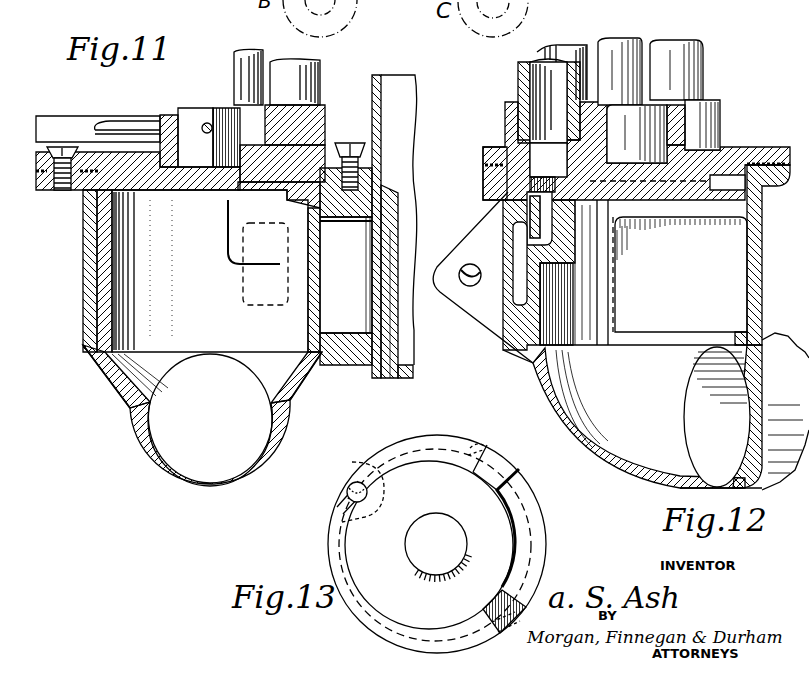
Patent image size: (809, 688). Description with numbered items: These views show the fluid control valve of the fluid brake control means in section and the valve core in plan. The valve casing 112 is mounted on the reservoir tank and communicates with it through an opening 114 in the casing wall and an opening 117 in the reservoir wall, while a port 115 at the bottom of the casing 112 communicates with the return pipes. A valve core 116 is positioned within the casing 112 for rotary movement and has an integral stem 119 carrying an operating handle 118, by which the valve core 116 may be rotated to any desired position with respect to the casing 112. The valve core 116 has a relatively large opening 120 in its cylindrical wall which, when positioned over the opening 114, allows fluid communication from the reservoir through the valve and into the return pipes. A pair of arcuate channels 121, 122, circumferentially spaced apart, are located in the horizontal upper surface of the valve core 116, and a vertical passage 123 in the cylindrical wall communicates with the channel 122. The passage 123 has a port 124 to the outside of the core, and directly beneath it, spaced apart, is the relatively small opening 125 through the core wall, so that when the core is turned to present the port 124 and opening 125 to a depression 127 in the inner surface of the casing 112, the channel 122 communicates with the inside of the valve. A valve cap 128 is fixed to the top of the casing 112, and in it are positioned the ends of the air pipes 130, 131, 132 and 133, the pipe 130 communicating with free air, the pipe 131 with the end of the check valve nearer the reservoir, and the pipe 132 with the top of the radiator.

In FIG. 11, the valve casing 112 is at (92, 278).
In FIG. 12, the valve casing 112 is at (754, 272).
In FIG. 11, the opening 114 is at (345, 318).
In FIG. 11, the port 115 is at (160, 418).
In FIG. 12, the port 115 is at (700, 430).
In FIG. 11, the valve core 116 is at (106, 305).
In FIG. 12, the valve core 116 is at (530, 322).
In FIG. 13, the valve core 116 is at (330, 543).
In FIG. 11, the opening 117 is at (381, 322).
In FIG. 11, the operating handle 118 is at (110, 122).
In FIG. 12, the operating handle 118 is at (690, 118).
In FIG. 11, the stem 119 is at (191, 118).
In FIG. 12, the stem 119 is at (645, 118).
In FIG. 13, the stem 119 is at (429, 553).
In FIG. 12, the opening 120 is at (662, 222).
In FIG. 13, the opening 120 is at (480, 446).
In FIG. 12, the arcuate channel 121 is at (727, 182).
In FIG. 13, the arcuate channel 121 is at (525, 535).
In FIG. 11, the arcuate channel 122 is at (296, 195).
In FIG. 12, the arcuate channel 122 is at (505, 190).
In FIG. 13, the arcuate channel 122 is at (415, 457).
In FIG. 12, the vertical passage 123 is at (540, 211).
In FIG. 13, the vertical passage 123 is at (358, 503).
In FIG. 12, the port 124 is at (540, 243).
In FIG. 13, the port 124 is at (355, 473).
In FIG. 12, the opening 125 is at (530, 290).
In FIG. 11, the depression 127 is at (243, 280).
In FIG. 12, the depression 127 is at (520, 263).
In FIG. 11, the valve cap 128 is at (128, 163).
In FIG. 12, the valve cap 128 is at (696, 158).
In FIG. 11, the air pipe 130 is at (247, 62).
In FIG. 12, the air pipe 130 is at (523, 82).
In FIG. 11, the air pipe 131 is at (318, 86).
In FIG. 12, the air pipe 131 is at (556, 52).
In FIG. 12, the air pipe 132 is at (610, 49).
In FIG. 12, the air pipe 133 is at (677, 50).